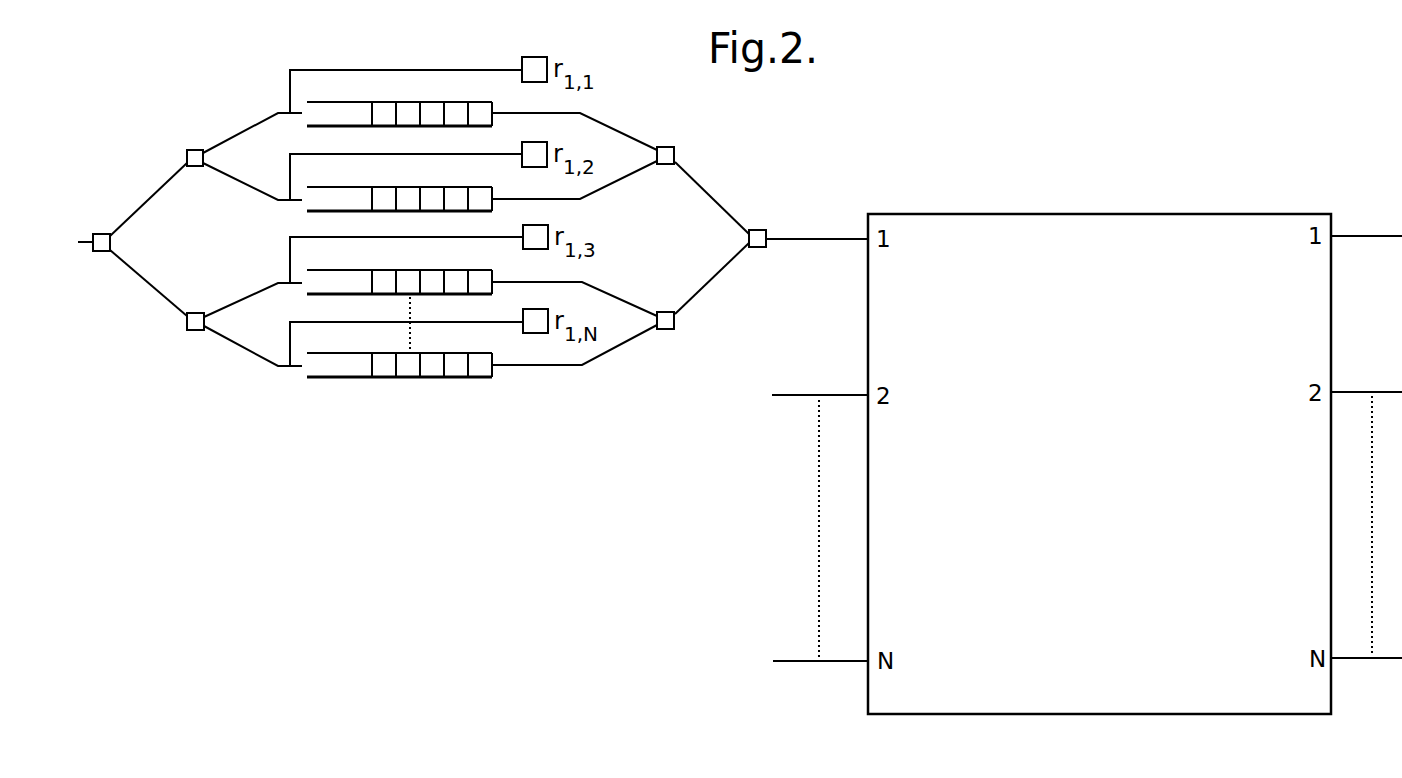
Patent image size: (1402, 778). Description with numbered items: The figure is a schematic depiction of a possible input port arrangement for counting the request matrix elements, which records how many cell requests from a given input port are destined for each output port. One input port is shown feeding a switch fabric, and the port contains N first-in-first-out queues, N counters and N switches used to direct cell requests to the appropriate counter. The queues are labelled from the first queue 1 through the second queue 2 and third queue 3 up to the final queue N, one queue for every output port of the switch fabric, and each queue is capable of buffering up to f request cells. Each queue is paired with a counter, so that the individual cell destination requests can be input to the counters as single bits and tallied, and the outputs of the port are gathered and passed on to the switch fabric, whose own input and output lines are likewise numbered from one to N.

The first shift register 1 is at (399, 100).
The second shift register 2 is at (399, 185).
The third shift register 3 is at (399, 269).
The number of input ports, queues, counters and switches N is at (399, 352).